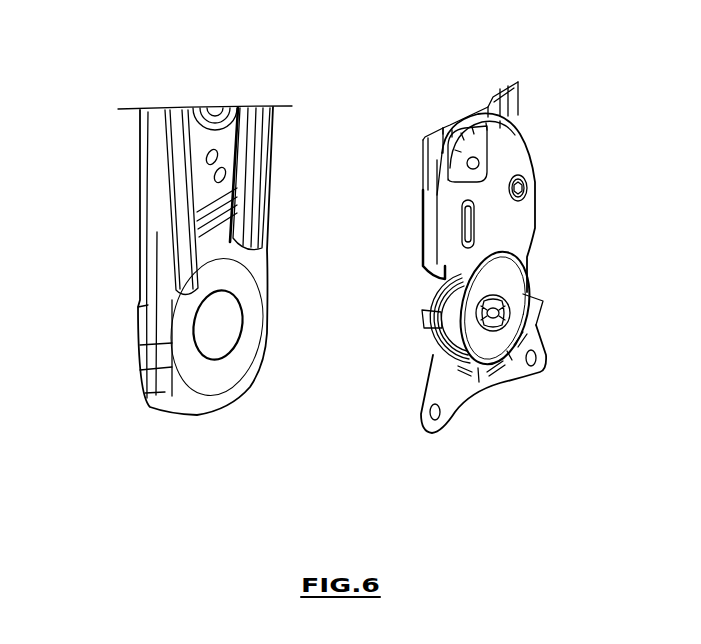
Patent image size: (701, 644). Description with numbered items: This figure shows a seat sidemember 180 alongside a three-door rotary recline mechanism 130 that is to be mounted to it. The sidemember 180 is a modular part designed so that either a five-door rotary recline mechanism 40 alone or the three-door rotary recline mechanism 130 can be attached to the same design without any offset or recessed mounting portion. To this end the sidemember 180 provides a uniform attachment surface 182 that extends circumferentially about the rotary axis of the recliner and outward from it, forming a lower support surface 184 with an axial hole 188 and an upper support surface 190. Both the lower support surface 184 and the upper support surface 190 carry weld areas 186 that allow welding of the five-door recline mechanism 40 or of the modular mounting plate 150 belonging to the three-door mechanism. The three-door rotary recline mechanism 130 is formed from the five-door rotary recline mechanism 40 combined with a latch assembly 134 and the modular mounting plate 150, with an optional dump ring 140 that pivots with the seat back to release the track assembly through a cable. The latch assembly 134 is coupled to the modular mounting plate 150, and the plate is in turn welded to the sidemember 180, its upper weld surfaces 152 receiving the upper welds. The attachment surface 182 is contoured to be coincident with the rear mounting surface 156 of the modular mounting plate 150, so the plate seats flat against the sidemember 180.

The five-door rotary recline mechanism 40 is at (515, 378).
The three-door rotary recline mechanism 130 is at (578, 166).
The latch assembly 134 is at (522, 162).
The dump ring 140 is at (425, 326).
The modular mounting plate 150 is at (510, 95).
The upper weld surfaces 152 is at (432, 145).
The rear mounting surface 156 is at (432, 168).
The sidemember 180 is at (177, 197).
The uniform attachment surface 182 is at (255, 262).
The lower support surface 184 is at (198, 370).
The weld area 186 is at (173, 137).
The axial hole 188 is at (220, 327).
The upper support surface 190 is at (175, 108).